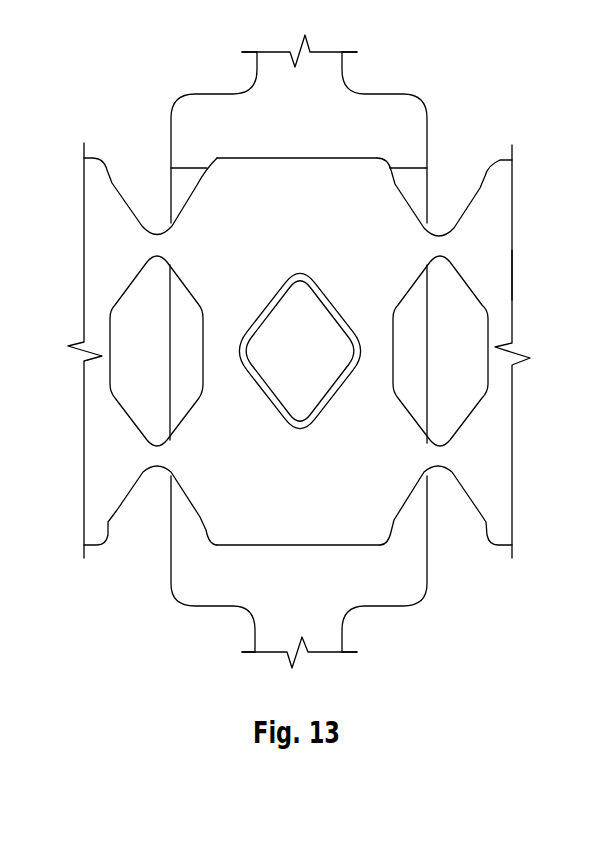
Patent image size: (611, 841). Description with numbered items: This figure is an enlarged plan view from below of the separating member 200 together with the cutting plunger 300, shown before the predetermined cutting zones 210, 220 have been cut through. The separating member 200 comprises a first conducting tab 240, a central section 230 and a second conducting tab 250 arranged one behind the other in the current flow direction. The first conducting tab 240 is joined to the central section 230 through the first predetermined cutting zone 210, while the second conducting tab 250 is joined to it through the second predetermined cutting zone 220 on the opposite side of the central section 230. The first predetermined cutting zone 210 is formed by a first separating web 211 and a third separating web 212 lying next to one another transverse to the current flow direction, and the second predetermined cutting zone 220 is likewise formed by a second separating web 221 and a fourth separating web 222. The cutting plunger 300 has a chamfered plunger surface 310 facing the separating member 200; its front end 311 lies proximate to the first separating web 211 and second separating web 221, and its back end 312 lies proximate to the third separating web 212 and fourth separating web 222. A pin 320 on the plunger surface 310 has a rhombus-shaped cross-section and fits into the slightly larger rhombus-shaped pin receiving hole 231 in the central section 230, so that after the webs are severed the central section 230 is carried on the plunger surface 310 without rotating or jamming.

The separating member 200 is at (495, 231).
The first predetermined cutting zone 210 is at (442, 213).
The first separating web 211 is at (438, 248).
The third separating web 212 is at (440, 460).
The second predetermined cutting zone 220 is at (158, 213).
The second separating web 221 is at (157, 243).
The fourth separating web 222 is at (153, 458).
The central section 230 is at (222, 533).
The pin receiving hole 231 is at (325, 418).
The first conducting tab 240 is at (495, 268).
The second conducting tab 250 is at (100, 297).
The cutting plunger 300 is at (407, 112).
The plunger surface 310 is at (412, 388).
The front end 311 is at (185, 177).
The back end 312 is at (412, 558).
The pin 320 is at (322, 322).